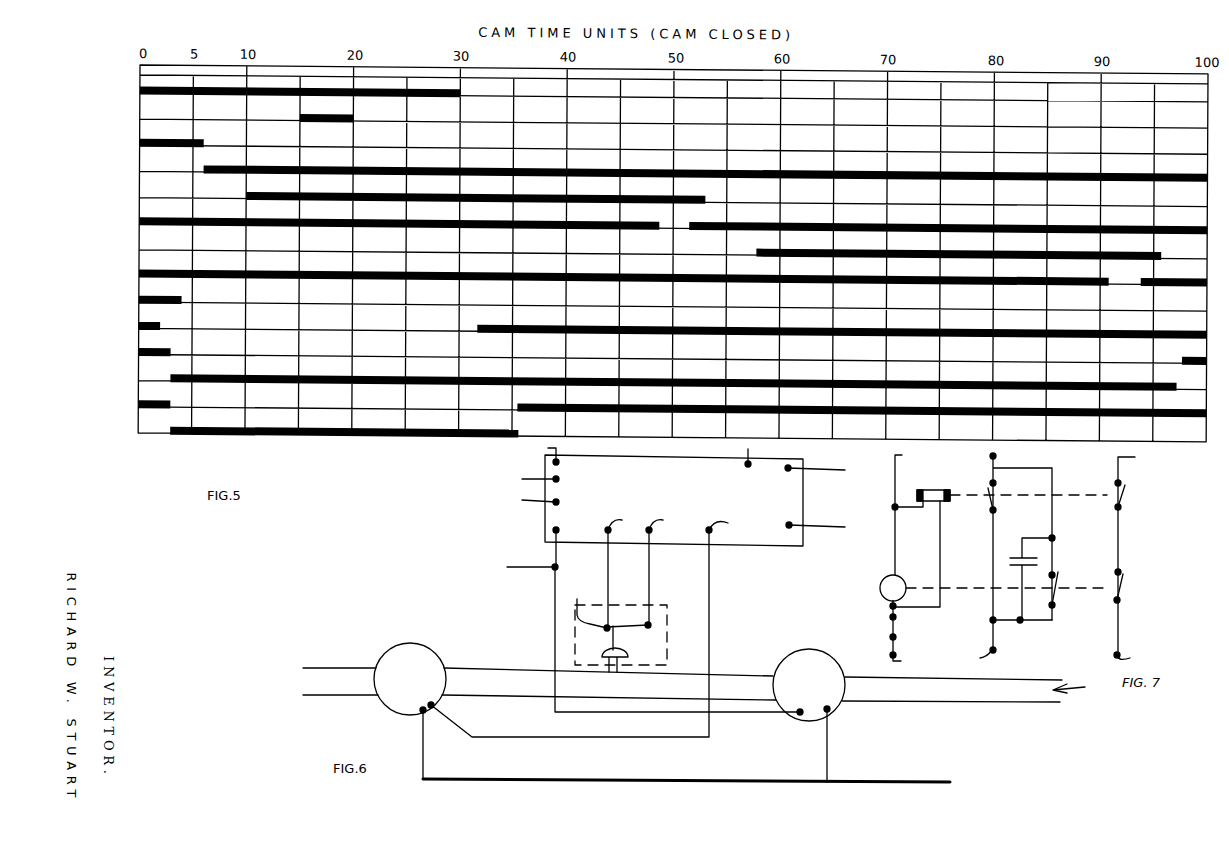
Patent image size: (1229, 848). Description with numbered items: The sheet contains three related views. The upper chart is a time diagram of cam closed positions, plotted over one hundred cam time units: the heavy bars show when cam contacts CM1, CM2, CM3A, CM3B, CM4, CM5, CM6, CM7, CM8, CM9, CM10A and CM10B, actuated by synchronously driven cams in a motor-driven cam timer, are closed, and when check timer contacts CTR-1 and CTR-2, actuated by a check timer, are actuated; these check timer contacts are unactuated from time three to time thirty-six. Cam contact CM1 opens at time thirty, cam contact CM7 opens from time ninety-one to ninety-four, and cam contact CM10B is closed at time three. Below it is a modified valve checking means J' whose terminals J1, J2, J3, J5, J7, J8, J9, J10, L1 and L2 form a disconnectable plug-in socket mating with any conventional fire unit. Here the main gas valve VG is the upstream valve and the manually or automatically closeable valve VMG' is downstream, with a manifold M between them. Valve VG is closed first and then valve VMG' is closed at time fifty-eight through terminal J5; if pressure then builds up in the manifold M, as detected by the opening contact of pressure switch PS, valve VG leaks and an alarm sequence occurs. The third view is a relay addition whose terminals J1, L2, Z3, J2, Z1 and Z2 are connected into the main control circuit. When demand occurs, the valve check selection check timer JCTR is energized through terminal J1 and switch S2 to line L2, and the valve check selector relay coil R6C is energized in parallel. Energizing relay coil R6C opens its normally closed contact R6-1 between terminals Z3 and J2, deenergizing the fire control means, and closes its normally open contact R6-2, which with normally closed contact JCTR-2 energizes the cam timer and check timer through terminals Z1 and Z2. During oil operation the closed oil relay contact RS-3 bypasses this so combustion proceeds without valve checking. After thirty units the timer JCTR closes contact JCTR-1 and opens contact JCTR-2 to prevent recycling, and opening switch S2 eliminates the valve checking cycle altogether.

In FIG. 5, the cam contact CM1 is at (269, 88).
In FIG. 5, the cam contact CM2 is at (216, 114).
In FIG. 5, the cam contact CM3A is at (141, 140).
In FIG. 5, the cam contact CM3B is at (642, 170).
In FIG. 5, the cam contact CM4 is at (391, 194).
In FIG. 5, the cam contact CM5 is at (642, 222).
In FIG. 5, the cam contact CM6 is at (619, 248).
In FIG. 5, the cam contact CM7 is at (642, 274).
In FIG. 5, the cam contact CM8 is at (129, 297).
In FIG. 5, the cam contact CM9 is at (642, 327).
In FIG. 5, the cam contact CM10A is at (642, 353).
In FIG. 5, the cam contact CM10B is at (626, 379).
In FIG. 5, the check timer contact CTR-1 is at (641, 405).
In FIG. 5, the check timer contact CTR-2 is at (297, 428).
In FIG. 6, the valve checking means J' is at (674, 500).
In FIG. 6, the terminal J1 is at (786, 471).
In FIG. 7, the terminal J1 is at (906, 512).
In FIG. 6, the terminal J2 is at (559, 462).
In FIG. 7, the terminal J2 is at (1003, 637).
In FIG. 6, the terminal J3 is at (559, 530).
In FIG. 6, the terminal J5 is at (581, 629).
In FIG. 6, the terminal J7 is at (659, 574).
In FIG. 6, the terminal J8 is at (618, 575).
In FIG. 6, the terminal J9 is at (559, 479).
In FIG. 6, the terminal J10 is at (557, 504).
In FIG. 6, the line L1 is at (746, 467).
In FIG. 6, the line L2 is at (786, 525).
In FIG. 7, the line L2 is at (904, 653).
In FIG. 6, the pressure switch PS is at (667, 629).
In FIG. 6, the downstream gas valve VMG' is at (410, 699).
In FIG. 6, the main gas valve VG is at (822, 649).
In FIG. 6, the manifold M is at (520, 698).
In FIG. 7, the valve check selector relay coil R6C is at (920, 487).
In FIG. 7, the normally closed relay contact R6-1 is at (990, 500).
In FIG. 7, the normally open relay contact R6-2 is at (1128, 493).
In FIG. 7, the oil relay contact RS-3 is at (1011, 564).
In FIG. 7, the valve check selection check timer JCTR is at (880, 581).
In FIG. 7, the normally open check timer contact JCTR-1 is at (1059, 598).
In FIG. 7, the normally closed check timer contact JCTR-2 is at (1123, 581).
In FIG. 7, the switch S2 is at (897, 622).
In FIG. 7, the terminal Z1 is at (1136, 554).
In FIG. 7, the terminal Z2 is at (1133, 655).
In FIG. 7, the terminal Z3 is at (990, 457).